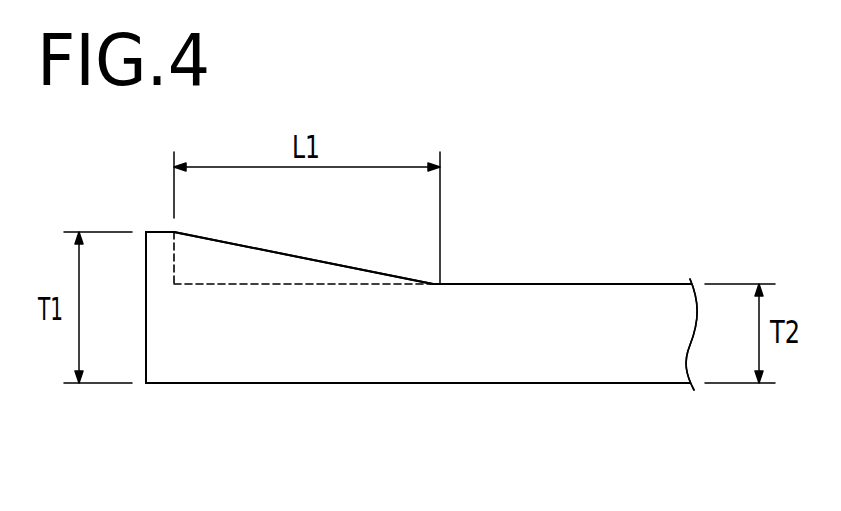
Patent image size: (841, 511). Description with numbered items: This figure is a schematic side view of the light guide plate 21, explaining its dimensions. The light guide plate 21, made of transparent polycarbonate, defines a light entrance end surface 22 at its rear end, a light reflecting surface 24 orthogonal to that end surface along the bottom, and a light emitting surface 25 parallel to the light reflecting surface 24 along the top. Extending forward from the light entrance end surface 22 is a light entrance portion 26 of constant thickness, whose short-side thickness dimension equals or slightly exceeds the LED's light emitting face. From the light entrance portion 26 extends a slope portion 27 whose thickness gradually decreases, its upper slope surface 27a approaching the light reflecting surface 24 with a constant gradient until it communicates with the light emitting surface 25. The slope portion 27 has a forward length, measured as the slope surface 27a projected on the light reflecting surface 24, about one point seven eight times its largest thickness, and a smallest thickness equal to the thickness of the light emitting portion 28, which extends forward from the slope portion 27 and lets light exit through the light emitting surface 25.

The light guide plate 21 is at (646, 151).
The light entrance end surface 22 is at (146, 353).
The light reflecting surface 24 is at (386, 383).
The light emitting surface 25 is at (467, 284).
The light entrance portion 26 is at (208, 347).
The slope portion 27 is at (157, 337).
The slope surface 27a is at (278, 253).
The light emitting portion 28 is at (608, 300).